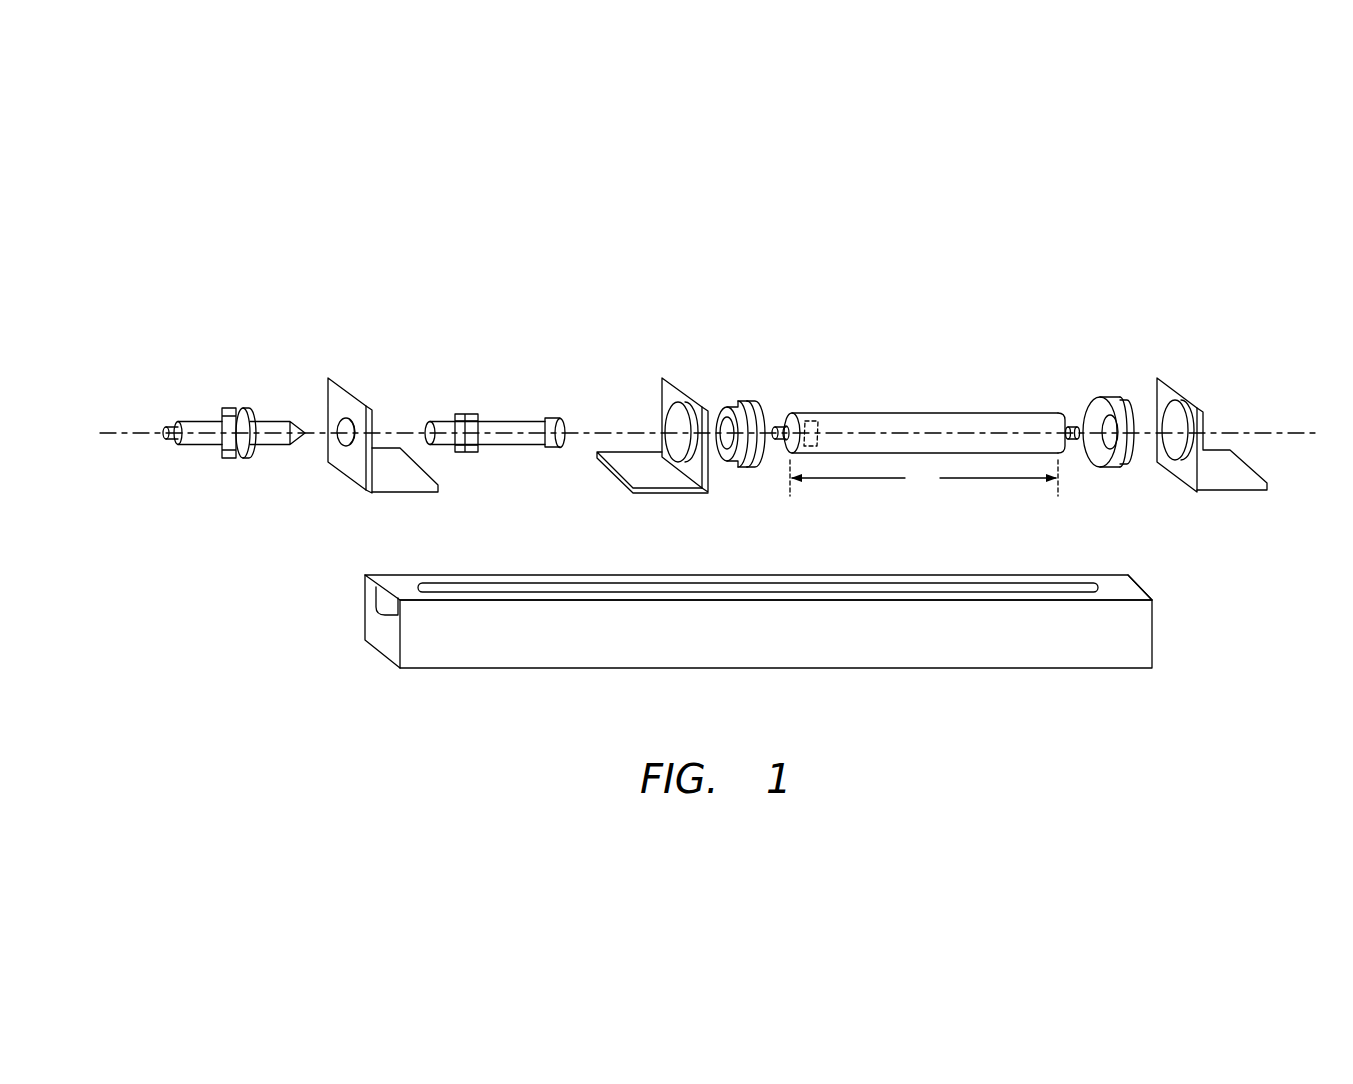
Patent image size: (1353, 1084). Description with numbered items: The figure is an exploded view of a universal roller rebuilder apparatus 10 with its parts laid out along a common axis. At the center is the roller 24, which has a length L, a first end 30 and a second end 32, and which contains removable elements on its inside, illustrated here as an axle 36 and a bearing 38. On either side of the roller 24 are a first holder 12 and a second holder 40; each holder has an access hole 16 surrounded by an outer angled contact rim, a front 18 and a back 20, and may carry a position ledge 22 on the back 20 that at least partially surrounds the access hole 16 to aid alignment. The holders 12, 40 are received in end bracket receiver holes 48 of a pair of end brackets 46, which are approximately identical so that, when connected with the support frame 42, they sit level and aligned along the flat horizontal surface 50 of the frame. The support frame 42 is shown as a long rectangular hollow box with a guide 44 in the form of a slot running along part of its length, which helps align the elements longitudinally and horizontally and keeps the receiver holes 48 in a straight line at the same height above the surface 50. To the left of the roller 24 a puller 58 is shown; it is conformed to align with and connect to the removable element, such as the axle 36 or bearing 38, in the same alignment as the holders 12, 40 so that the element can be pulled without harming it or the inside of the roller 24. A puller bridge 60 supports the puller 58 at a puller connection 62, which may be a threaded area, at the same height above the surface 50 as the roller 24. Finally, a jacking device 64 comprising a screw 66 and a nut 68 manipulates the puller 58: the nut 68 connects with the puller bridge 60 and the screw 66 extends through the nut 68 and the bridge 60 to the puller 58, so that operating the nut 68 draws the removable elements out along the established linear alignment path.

The universal roller rebuilder apparatus 10 is at (980, 240).
The first holder 12 is at (922, 401).
The access hole 16 is at (767, 410).
The front 18 is at (760, 410).
The back 20 is at (720, 405).
The position ledge 22 is at (736, 400).
The roller 24 is at (924, 396).
The first end 30 is at (800, 413).
The second end 32 is at (1033, 413).
The axle 36 is at (778, 445).
The bearing 38 is at (820, 423).
The second holder 40 is at (1093, 412).
The support frame 42 is at (778, 623).
The guide 44 is at (826, 585).
The end brackets 46 is at (608, 468).
The end bracket receiver holes 48 is at (664, 414).
The flat horizontal surface 50 is at (1112, 588).
The puller 58 is at (490, 422).
The puller bridge 60 is at (360, 443).
The puller connection 62 is at (330, 425).
The jacking device 64 is at (193, 440).
The screw 66 is at (192, 420).
The nut 68 is at (238, 455).